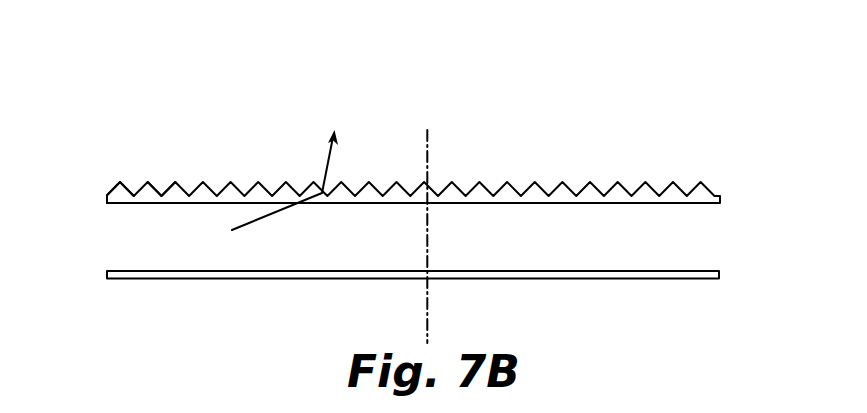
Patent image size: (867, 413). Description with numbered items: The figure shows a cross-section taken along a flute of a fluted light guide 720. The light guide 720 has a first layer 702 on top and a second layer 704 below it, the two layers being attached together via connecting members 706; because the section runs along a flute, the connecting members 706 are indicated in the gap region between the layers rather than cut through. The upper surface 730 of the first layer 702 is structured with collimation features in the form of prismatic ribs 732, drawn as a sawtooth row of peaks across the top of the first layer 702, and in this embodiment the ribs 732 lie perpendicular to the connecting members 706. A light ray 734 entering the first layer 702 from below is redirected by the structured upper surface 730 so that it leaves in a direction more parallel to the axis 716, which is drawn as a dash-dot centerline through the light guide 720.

The first layer 702 is at (714, 194).
The second layer 704 is at (686, 279).
The connecting members 706 is at (548, 260).
The axis 716 is at (427, 323).
The light guide 720 is at (739, 162).
The upper surface 730 is at (115, 188).
The prismatic ribs 732 is at (173, 187).
The light 734 is at (260, 221).